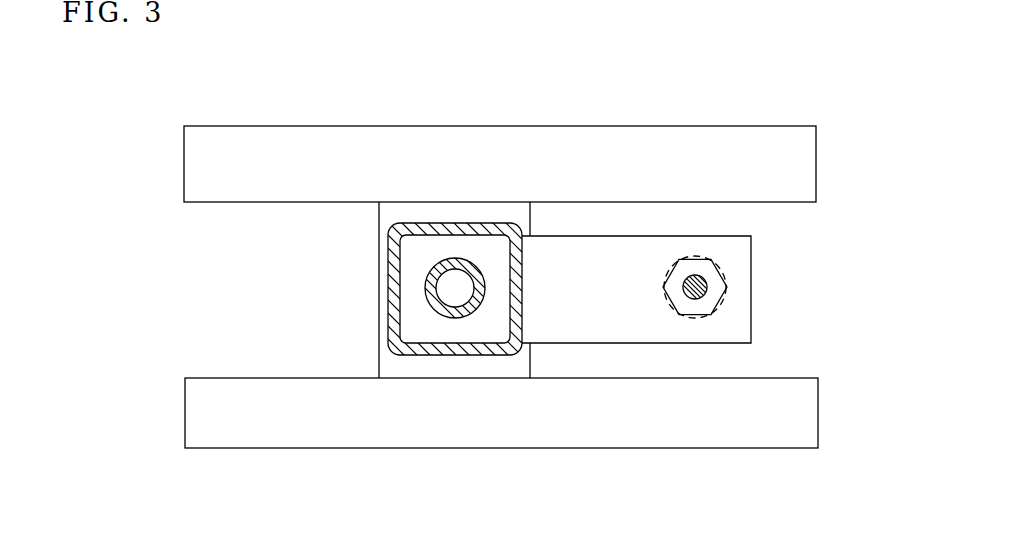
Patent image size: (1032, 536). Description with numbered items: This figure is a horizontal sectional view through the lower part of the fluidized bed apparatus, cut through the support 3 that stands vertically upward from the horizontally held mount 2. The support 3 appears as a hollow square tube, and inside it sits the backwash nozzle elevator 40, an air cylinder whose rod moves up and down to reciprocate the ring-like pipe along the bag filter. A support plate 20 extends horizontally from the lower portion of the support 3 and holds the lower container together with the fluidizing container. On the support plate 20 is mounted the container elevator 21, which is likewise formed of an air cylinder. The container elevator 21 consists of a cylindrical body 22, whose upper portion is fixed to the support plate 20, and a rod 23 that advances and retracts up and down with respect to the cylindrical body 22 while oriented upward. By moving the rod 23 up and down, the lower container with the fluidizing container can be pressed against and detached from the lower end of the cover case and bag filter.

The mount 2 is at (388, 213).
The support 3 is at (397, 298).
The support plate 20 is at (594, 325).
The container elevator 21 is at (767, 287).
The cylindrical body 22 is at (725, 304).
The rod 23 is at (705, 282).
The backwash nozzle elevator 40 is at (473, 252).